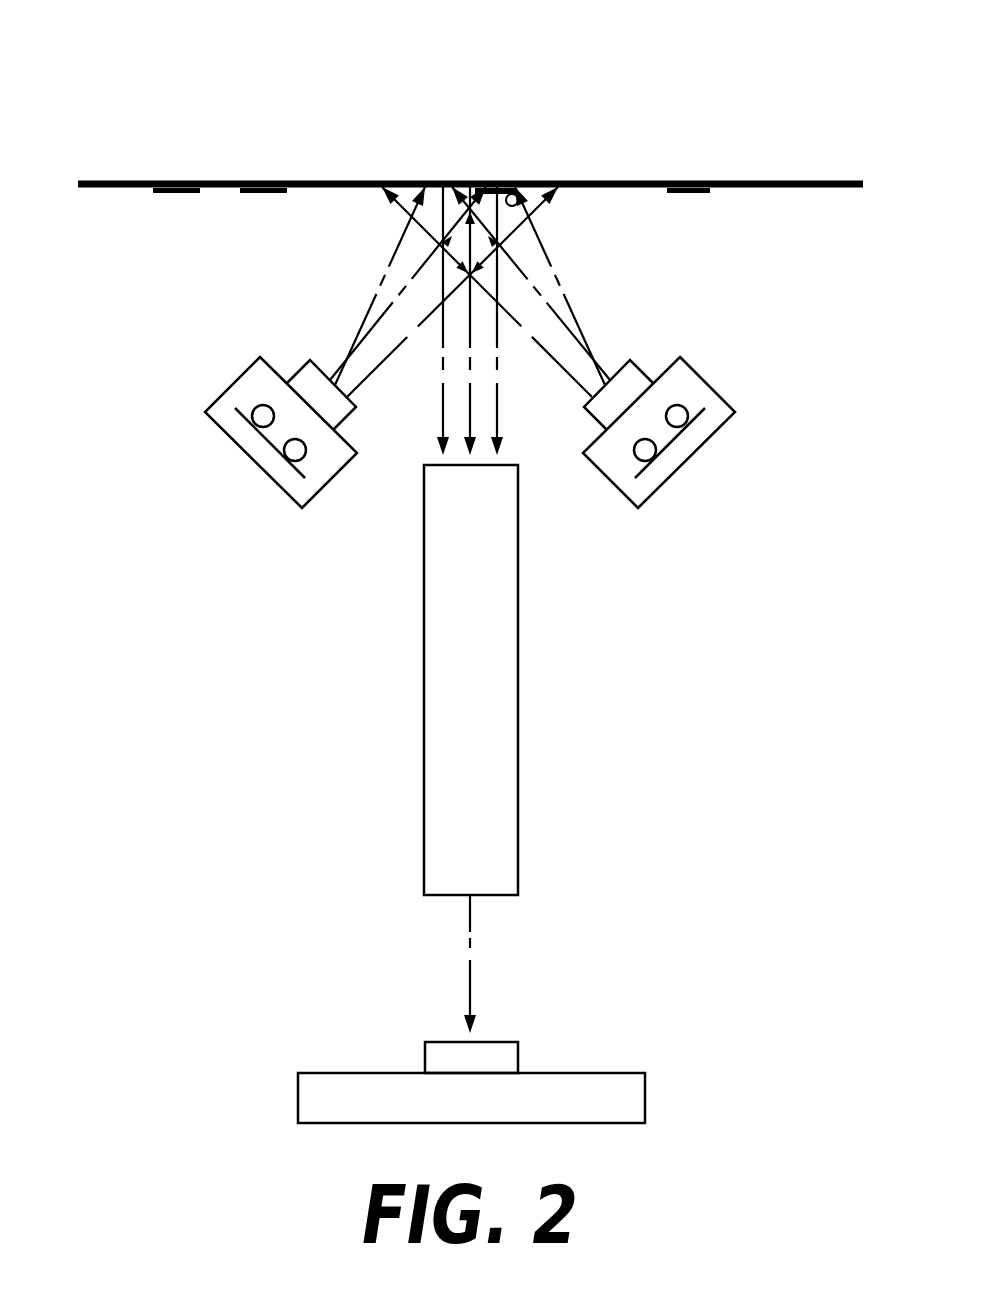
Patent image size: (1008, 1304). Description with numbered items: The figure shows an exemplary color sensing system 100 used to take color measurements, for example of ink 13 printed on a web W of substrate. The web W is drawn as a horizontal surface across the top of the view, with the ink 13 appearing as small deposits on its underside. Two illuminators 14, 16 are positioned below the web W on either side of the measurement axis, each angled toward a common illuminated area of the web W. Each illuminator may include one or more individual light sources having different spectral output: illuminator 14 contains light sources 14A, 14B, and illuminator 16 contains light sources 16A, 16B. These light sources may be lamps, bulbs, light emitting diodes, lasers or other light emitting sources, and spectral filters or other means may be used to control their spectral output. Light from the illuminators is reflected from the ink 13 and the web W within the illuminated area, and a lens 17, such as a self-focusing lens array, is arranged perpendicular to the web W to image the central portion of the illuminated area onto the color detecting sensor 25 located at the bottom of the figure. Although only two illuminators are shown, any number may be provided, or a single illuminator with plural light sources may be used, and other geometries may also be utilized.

The color sensing system 100 is at (293, 62).
The web W is at (745, 182).
The ink 13 is at (253, 197).
The illuminator 14 is at (252, 463).
The light source 14A is at (253, 400).
The light source 14B is at (312, 463).
The illuminator 16 is at (690, 463).
The light source 16A is at (667, 480).
The light source 16B is at (697, 390).
The lens 17 is at (495, 897).
The color detecting sensor 25 is at (497, 1042).